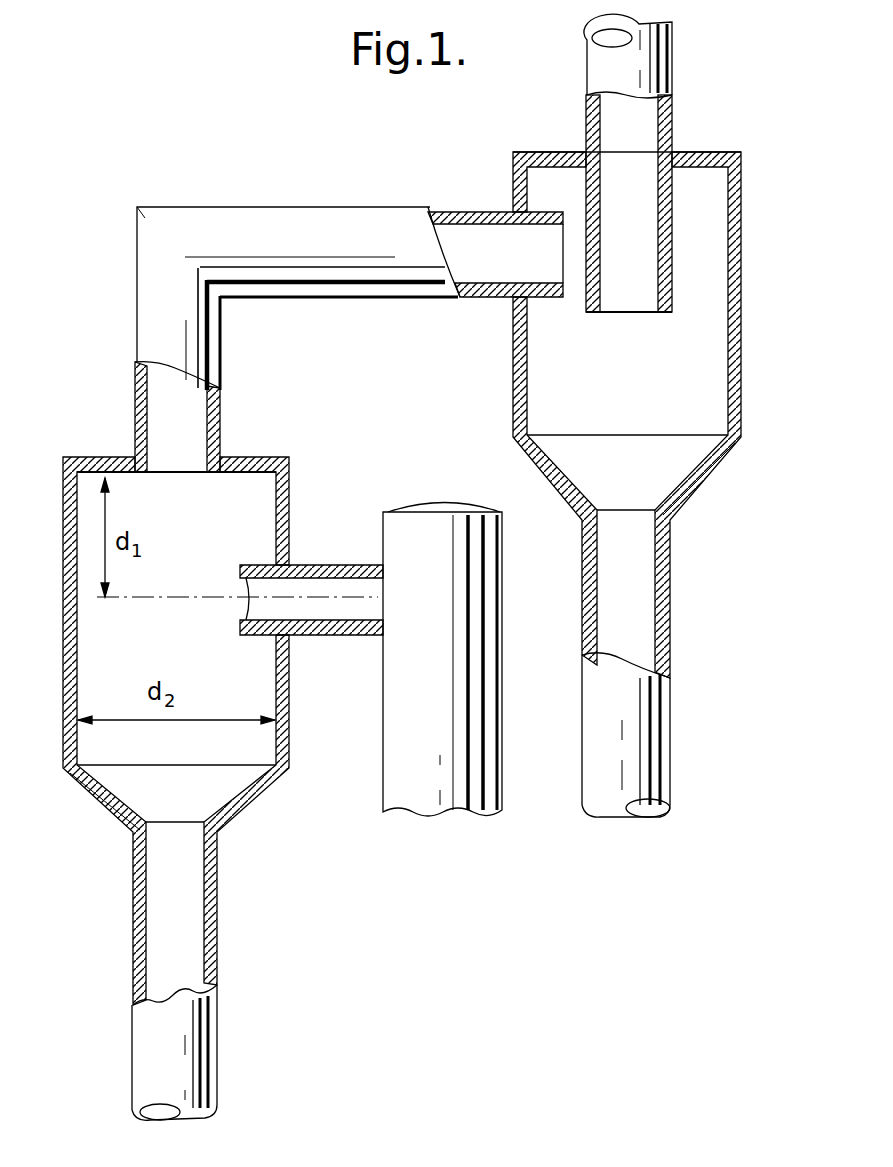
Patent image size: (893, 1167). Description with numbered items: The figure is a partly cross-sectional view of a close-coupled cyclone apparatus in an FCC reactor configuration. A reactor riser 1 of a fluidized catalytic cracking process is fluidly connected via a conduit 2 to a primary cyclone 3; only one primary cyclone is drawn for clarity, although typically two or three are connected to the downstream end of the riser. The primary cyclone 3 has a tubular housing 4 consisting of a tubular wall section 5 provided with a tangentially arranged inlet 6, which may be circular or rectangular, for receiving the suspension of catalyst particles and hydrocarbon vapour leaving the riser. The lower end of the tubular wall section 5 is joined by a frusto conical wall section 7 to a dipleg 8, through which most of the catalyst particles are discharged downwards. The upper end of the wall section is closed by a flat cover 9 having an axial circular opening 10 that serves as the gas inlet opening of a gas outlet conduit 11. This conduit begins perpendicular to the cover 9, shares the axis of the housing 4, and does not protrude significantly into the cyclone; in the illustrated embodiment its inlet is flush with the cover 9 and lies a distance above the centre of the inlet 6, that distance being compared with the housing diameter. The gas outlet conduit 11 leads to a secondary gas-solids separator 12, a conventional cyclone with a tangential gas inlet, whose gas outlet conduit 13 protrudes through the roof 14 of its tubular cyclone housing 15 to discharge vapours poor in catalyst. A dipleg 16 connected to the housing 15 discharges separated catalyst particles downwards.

The reactor riser 1 is at (433, 684).
The conduit 2 is at (316, 565).
The primary cyclone 3 is at (62, 668).
The tubular housing 4 is at (289, 703).
The tubular wall section 5 is at (289, 755).
The tangentially arranged inlet 6 is at (243, 607).
The frusto conical wall section 7 is at (262, 800).
The dipleg 8 is at (133, 905).
The cover 9 is at (97, 455).
The axial circular opening 10 is at (188, 472).
The gas outlet conduit 11 is at (218, 400).
The secondary gas-solids separator 12 is at (742, 400).
The gas outlet conduit 13 is at (673, 77).
The roof 14 is at (707, 152).
The tubular cyclone housing 15 is at (742, 272).
The dipleg 16 is at (672, 655).